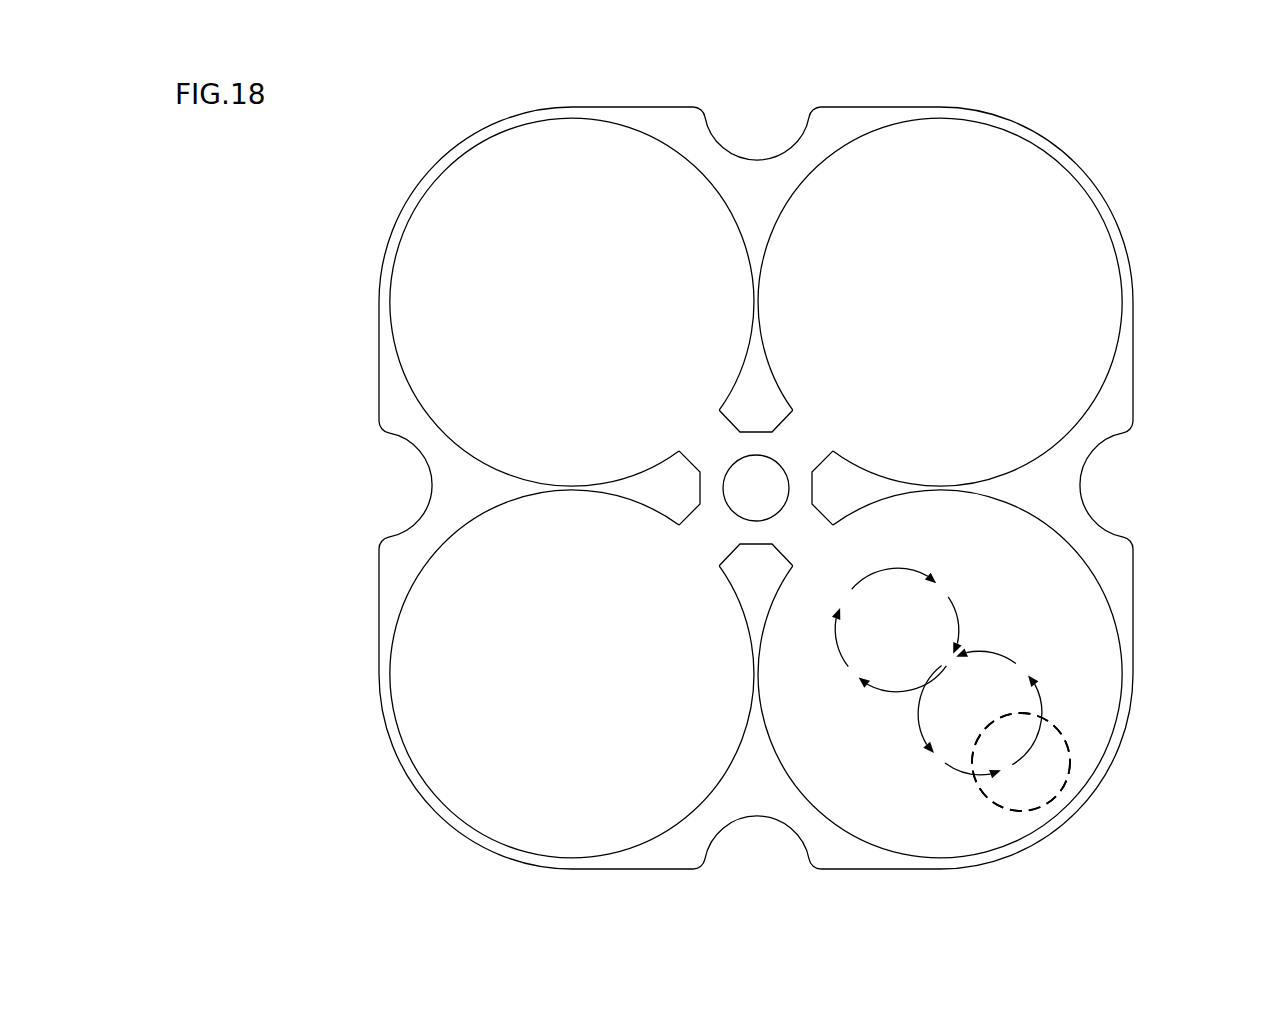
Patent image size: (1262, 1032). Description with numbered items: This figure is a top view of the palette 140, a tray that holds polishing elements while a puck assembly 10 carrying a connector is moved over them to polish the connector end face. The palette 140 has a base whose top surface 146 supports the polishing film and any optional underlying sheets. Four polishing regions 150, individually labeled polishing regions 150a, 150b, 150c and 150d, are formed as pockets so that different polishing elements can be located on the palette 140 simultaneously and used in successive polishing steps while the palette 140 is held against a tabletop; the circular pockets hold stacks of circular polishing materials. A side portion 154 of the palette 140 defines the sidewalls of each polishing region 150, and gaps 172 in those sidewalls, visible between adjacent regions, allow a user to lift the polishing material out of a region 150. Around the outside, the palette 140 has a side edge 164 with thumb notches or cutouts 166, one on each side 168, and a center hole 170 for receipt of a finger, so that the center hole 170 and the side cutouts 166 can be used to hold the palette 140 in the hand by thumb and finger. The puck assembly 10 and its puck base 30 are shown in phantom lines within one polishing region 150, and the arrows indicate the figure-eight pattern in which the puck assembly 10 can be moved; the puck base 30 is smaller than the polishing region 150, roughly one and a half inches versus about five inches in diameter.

The palette 140 is at (326, 268).
The top surface 146 is at (1097, 308).
The polishing region 150 is at (572, 239).
The polishing region 150a is at (588, 729).
The polishing region 150b is at (609, 351).
The polishing region 150c is at (980, 349).
The polishing region 150d is at (903, 752).
The side portion 154 is at (852, 123).
The side edge 164 is at (857, 868).
The thumb notches or cutouts 166 is at (715, 137).
The side 168 is at (579, 106).
The center hole 170 is at (775, 460).
The gaps 172 is at (803, 537).
The puck assembly 10 is at (1070, 768).
The puck base 30 is at (1040, 807).